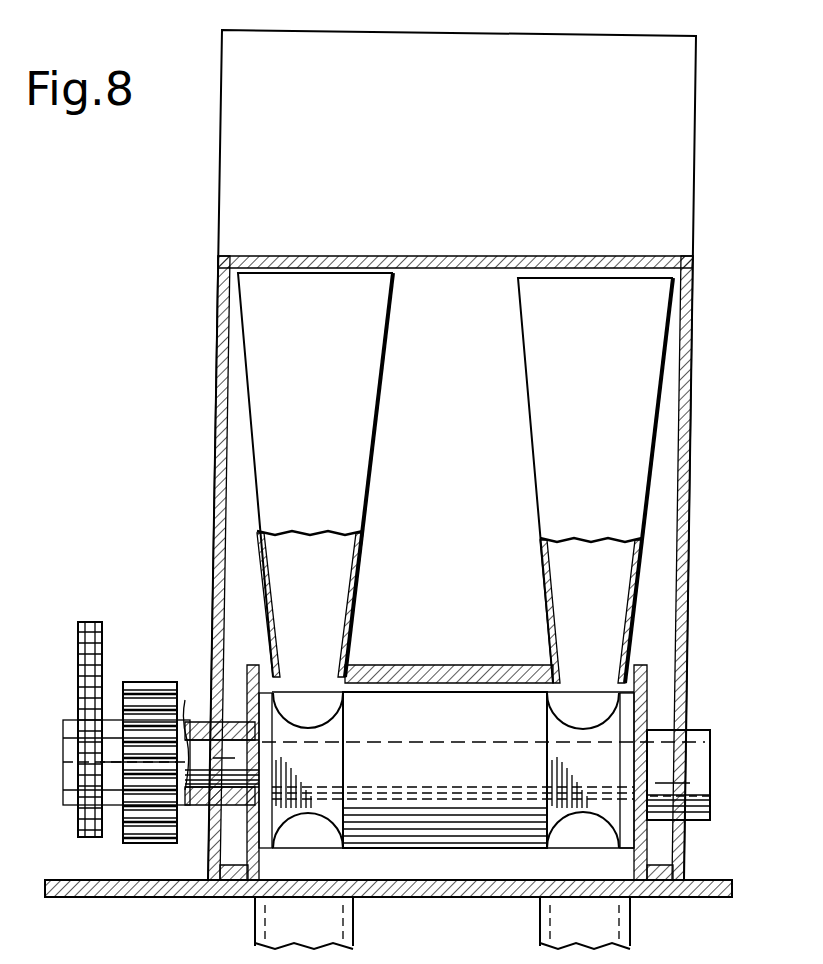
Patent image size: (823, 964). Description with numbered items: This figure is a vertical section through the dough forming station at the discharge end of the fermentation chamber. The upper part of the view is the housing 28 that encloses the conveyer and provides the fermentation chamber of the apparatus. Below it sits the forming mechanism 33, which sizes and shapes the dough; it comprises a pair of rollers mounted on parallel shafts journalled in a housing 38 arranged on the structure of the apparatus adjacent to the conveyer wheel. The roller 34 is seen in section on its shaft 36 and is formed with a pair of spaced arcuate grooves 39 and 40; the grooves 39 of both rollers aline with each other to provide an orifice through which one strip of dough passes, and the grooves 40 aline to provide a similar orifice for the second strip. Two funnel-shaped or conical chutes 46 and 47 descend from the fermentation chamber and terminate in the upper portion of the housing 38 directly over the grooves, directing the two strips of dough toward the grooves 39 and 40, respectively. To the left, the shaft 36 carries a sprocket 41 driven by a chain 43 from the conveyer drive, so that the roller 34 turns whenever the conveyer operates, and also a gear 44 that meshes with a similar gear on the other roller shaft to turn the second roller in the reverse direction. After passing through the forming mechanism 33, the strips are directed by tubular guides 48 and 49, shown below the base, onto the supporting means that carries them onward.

The housing 28 is at (230, 228).
The forming mechanism 33 is at (476, 743).
The roller 34 is at (432, 848).
The shaft 36 is at (186, 760).
The housing 38 is at (415, 665).
The arcuate groove 39 is at (307, 727).
The arcuate groove 40 is at (579, 732).
The sprocket 41 is at (85, 762).
The chain 43 is at (78, 676).
The gear 44 is at (158, 684).
The funnel-shaped chute 46 is at (376, 456).
The funnel-shaped chute 47 is at (542, 478).
The tubular guide 48 is at (256, 935).
The tubular guide 49 is at (632, 931).